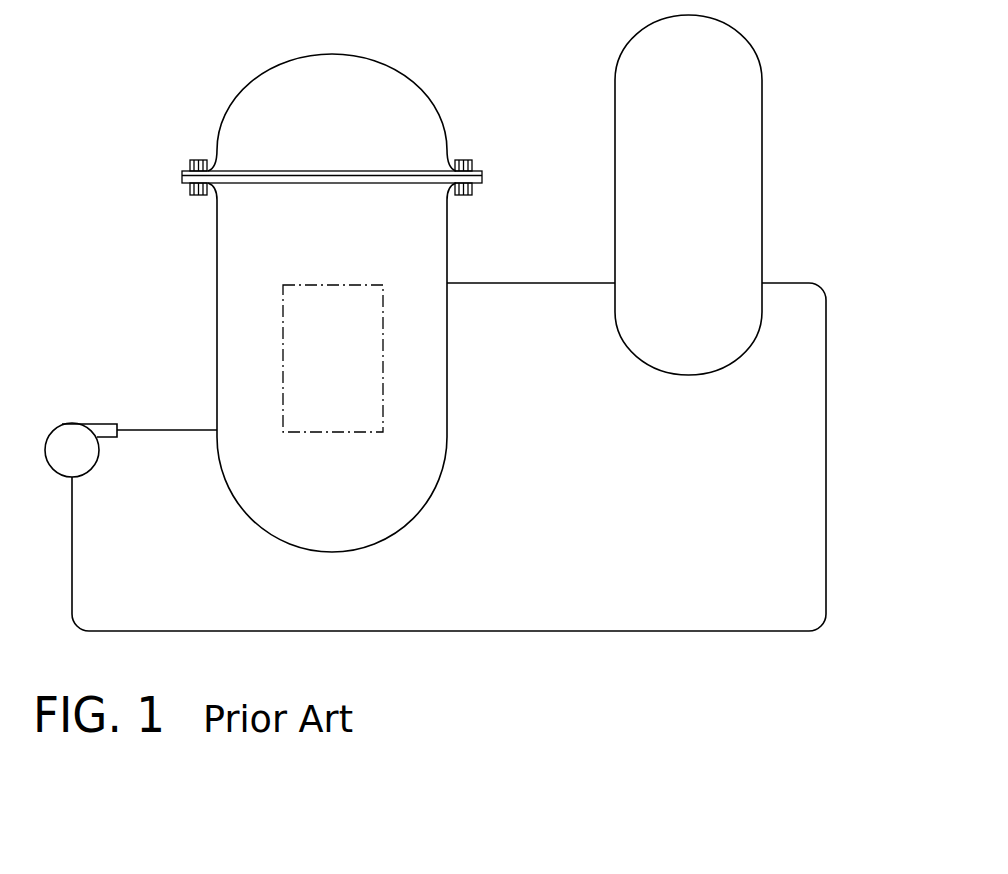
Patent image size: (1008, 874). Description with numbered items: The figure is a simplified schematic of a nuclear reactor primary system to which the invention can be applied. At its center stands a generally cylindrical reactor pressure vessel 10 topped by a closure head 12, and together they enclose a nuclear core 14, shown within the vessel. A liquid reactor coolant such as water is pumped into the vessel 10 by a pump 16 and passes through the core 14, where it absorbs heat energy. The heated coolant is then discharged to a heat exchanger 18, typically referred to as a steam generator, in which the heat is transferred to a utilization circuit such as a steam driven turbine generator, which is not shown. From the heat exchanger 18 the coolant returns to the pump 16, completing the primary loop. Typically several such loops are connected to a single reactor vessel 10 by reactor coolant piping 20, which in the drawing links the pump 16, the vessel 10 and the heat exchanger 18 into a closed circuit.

The reactor pressure vessel 10 is at (348, 372).
The closure head 12 is at (223, 115).
The nuclear core 14 is at (280, 345).
The pump 16 is at (62, 423).
The heat exchanger 18 is at (762, 128).
The reactor coolant piping 20 is at (826, 557).